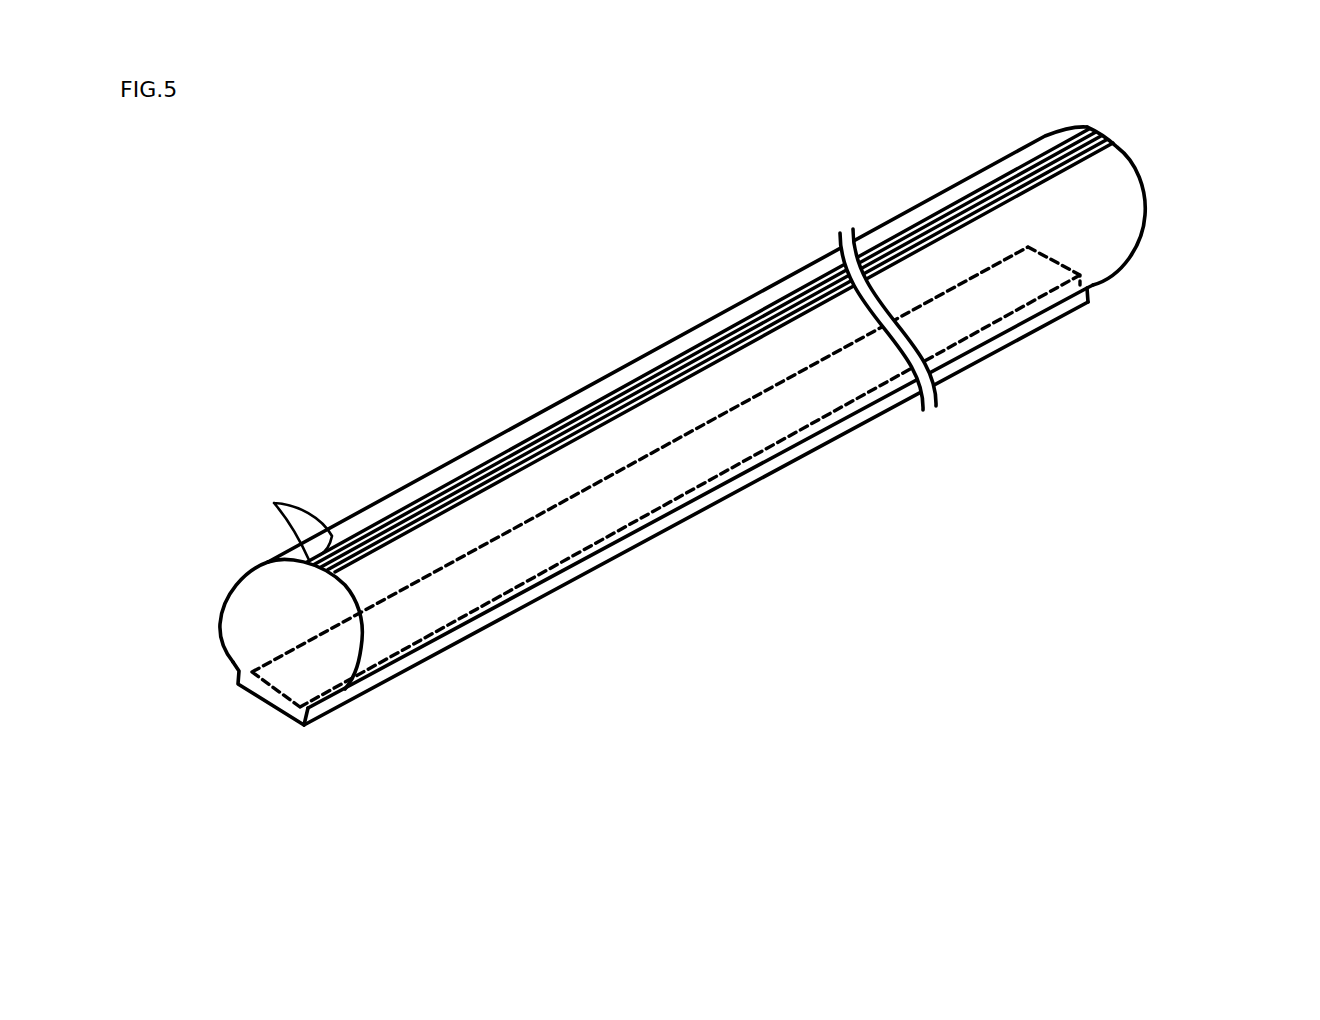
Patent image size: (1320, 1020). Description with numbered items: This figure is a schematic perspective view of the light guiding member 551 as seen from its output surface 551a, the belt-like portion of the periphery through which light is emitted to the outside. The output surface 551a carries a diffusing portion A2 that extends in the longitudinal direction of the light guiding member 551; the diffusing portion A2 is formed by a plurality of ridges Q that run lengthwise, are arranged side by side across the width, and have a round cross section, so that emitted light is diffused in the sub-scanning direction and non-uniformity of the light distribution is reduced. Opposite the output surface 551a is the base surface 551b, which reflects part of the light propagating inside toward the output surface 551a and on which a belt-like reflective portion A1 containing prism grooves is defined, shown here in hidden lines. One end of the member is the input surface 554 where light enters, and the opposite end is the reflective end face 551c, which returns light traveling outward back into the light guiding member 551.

The light guiding member 551 is at (590, 383).
The output surface 551a is at (418, 568).
The base surface 551b is at (264, 706).
The reflective end face 551c is at (1143, 187).
The input surface 554 is at (267, 623).
The reflective portion A1 is at (252, 672).
The diffusing portion A2 is at (405, 523).
The ridges Q is at (292, 520).